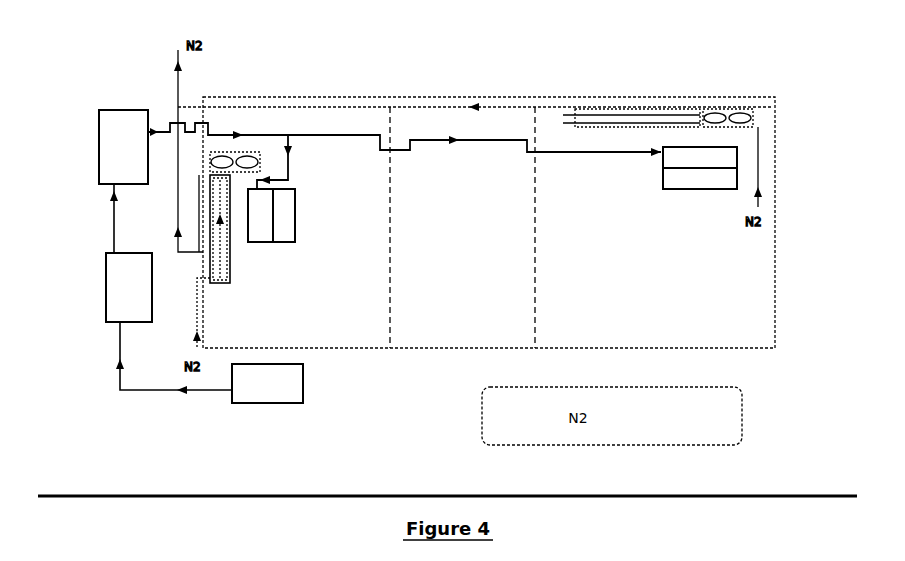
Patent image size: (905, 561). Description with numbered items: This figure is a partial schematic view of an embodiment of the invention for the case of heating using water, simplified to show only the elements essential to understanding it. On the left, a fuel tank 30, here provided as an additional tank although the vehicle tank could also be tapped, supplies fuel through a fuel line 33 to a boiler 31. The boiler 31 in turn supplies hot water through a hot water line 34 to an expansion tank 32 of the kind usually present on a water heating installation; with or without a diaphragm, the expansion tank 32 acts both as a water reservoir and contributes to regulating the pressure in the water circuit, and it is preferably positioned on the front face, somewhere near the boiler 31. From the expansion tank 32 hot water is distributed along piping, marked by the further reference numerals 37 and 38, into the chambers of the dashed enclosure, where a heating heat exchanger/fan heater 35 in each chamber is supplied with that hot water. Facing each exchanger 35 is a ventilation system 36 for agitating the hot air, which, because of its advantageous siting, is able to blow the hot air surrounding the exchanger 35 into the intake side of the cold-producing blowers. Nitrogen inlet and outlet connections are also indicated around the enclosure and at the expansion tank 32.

The fuel tank 30 is at (267, 383).
The boiler 31 is at (129, 287).
The expansion tank 32 is at (123, 147).
The fuel line 33 is at (160, 398).
The hot water line 34 is at (107, 220).
The heating heat exchanger/fan heater 35 is at (258, 247).
The ventilation system 36 is at (300, 235).
The branch gas pipe 37 is at (294, 165).
The main gas distribution pipe 38 is at (508, 147).